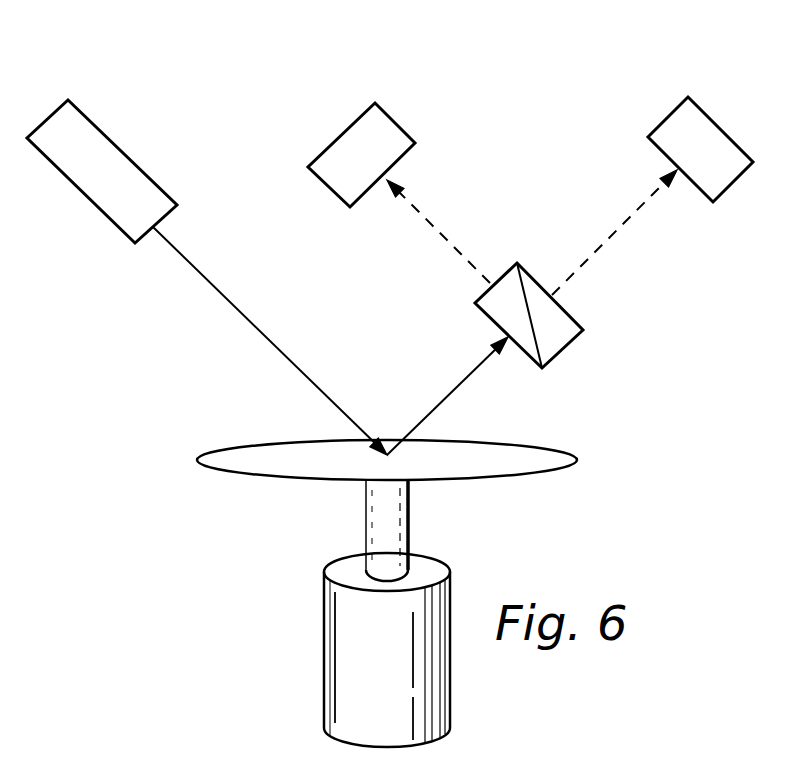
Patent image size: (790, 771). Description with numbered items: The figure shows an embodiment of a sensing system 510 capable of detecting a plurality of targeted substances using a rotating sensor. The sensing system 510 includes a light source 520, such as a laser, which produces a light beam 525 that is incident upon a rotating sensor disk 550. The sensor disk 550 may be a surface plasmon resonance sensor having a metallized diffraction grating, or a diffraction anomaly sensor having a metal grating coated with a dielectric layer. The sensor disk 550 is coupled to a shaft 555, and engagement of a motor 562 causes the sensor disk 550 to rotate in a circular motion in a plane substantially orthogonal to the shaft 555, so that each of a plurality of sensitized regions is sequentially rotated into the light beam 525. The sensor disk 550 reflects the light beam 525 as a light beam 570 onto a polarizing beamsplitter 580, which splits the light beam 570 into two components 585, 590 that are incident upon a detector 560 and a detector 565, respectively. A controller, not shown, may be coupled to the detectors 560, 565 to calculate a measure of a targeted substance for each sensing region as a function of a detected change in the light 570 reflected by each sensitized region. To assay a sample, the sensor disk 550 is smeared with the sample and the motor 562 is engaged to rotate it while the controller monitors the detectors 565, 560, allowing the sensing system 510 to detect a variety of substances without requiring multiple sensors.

The sensing system 510 is at (578, 80).
The light source 520 is at (102, 171).
The light beam 525 is at (198, 263).
The sensor disk 550 is at (387, 460).
The shaft 555 is at (365, 512).
The detector 560 is at (361, 155).
The motor 562 is at (323, 650).
The detector 565 is at (700, 149).
The light beam 570 is at (450, 390).
The polarizing beamsplitter 580 is at (567, 352).
The component 585 is at (433, 223).
The component 590 is at (597, 250).